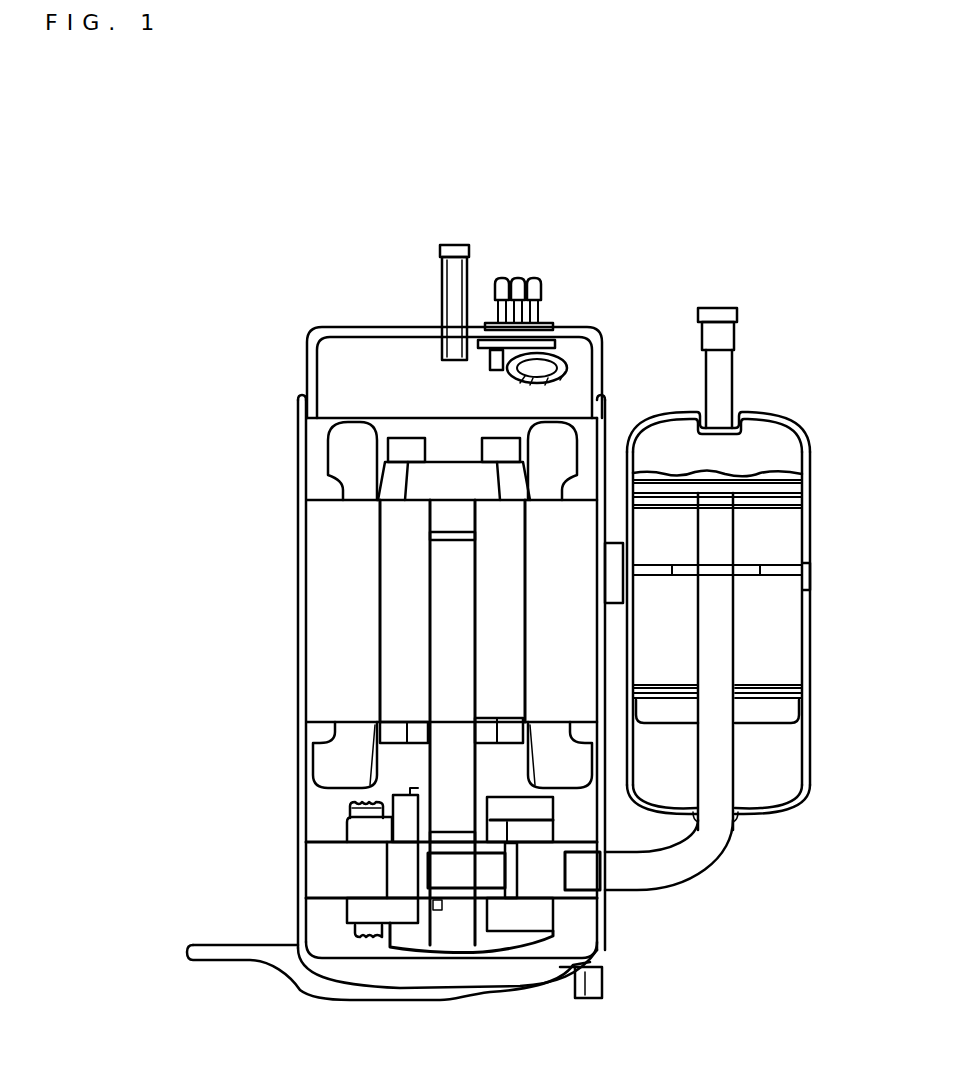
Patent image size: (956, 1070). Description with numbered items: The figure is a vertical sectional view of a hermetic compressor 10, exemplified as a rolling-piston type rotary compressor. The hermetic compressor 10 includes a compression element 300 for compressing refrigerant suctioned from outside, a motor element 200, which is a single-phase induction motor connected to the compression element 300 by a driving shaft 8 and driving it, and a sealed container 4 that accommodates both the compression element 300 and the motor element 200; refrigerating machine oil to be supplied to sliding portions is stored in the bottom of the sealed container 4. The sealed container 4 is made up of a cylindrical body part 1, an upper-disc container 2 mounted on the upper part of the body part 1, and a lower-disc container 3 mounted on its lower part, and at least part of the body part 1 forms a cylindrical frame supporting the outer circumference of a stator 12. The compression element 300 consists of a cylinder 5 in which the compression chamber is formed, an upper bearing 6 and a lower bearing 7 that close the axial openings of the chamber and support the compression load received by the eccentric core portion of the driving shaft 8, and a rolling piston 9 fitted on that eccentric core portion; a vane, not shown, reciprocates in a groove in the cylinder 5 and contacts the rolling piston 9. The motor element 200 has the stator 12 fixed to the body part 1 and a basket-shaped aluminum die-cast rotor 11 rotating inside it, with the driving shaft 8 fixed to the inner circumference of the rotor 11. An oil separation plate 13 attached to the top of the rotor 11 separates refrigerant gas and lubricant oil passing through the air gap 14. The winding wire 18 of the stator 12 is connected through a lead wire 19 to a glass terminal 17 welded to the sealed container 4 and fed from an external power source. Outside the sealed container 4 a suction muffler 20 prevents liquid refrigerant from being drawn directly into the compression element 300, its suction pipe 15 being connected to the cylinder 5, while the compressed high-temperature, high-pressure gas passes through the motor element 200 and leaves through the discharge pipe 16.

The body part 1 is at (297, 523).
The upper-disc container 2 is at (562, 330).
The lower-disc container 3 is at (600, 955).
The sealed container 4 is at (310, 353).
The cylinder 5 is at (362, 885).
The upper bearing 6 is at (418, 838).
The lower bearing 7 is at (400, 905).
The driving shaft 8 is at (450, 873).
The rolling piston 9 is at (350, 817).
The hermetic compressor 10 is at (450, 228).
The rotor 11 is at (403, 565).
The stator 12 is at (337, 632).
The oil separation plate 13 is at (453, 462).
The air gap 14 is at (378, 675).
The suction pipe 15 is at (707, 848).
The discharge pipe 16 is at (468, 247).
The glass terminal 17 is at (530, 283).
The winding wire 18 is at (350, 440).
The lead wire 19 is at (565, 360).
The suction muffler 20 is at (747, 620).
The motor element 200 is at (160, 540).
The compression element 300 is at (173, 730).